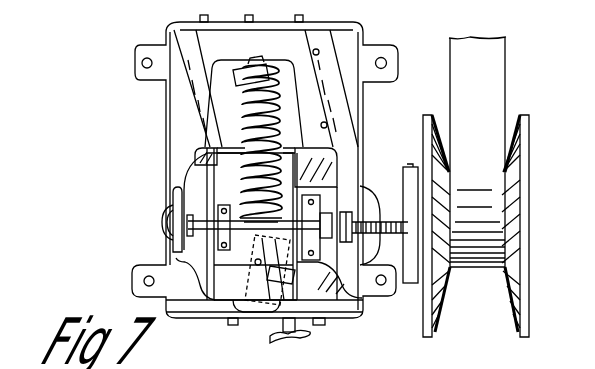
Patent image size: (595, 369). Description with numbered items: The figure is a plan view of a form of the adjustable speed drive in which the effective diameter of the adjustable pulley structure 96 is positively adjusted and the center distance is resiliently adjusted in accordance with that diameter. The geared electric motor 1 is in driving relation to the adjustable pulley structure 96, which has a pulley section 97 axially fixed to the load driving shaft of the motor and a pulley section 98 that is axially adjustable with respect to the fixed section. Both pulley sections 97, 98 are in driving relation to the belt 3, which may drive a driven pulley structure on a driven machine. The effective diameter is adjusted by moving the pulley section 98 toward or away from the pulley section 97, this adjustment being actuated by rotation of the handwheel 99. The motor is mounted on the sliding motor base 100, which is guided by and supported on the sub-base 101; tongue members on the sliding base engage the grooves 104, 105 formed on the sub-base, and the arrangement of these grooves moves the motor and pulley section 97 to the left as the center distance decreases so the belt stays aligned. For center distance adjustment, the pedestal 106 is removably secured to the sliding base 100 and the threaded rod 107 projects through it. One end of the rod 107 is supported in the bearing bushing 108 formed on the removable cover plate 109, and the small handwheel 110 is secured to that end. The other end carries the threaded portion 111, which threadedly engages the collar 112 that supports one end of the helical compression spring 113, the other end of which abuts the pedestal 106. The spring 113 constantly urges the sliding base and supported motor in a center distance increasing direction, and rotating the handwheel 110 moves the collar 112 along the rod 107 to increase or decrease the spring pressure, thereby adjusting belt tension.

The geared electric motor 1 is at (193, 163).
The belt 3 is at (506, 99).
The adjustable pulley structure 96 is at (480, 311).
The pulley section 97 is at (516, 324).
The pulley section 98 is at (436, 324).
The handwheel 99 is at (167, 201).
The sliding motor base 100 is at (180, 313).
The sub-base 101 is at (166, 109).
The groove 104 is at (186, 49).
The groove 105 is at (317, 53).
The pedestal 106 is at (255, 263).
The threaded rod 107 is at (272, 286).
The bearing bushing 108 is at (272, 325).
The removable cover plate 109 is at (228, 322).
The small handwheel 110 is at (307, 338).
The threaded portion 111 is at (241, 97).
The collar 112 is at (234, 75).
The helical compression spring 113 is at (263, 97).